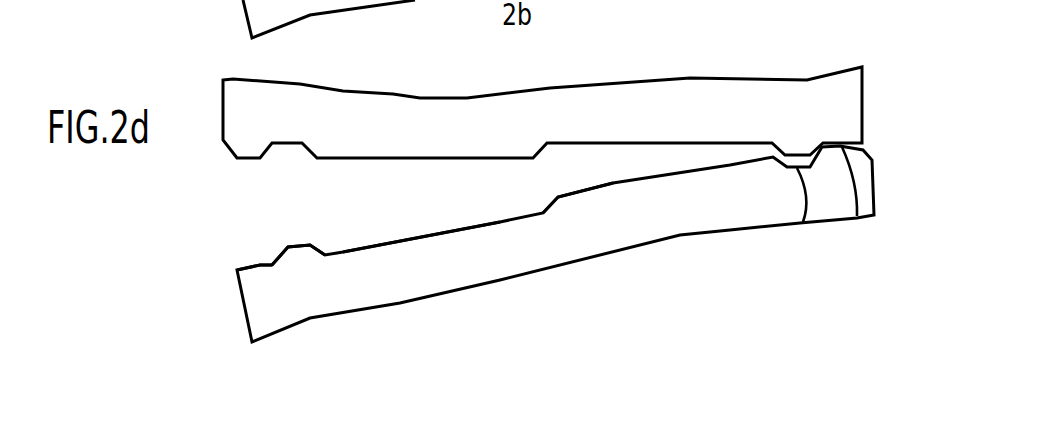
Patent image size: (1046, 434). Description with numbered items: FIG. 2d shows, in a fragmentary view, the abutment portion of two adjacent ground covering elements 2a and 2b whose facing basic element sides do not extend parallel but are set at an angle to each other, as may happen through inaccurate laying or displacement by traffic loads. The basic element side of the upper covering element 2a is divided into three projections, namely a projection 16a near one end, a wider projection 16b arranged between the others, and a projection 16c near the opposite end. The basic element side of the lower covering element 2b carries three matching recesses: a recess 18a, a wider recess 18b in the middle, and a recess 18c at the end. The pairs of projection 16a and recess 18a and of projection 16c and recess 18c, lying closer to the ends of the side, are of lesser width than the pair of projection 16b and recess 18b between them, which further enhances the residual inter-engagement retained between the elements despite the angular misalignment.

The covering element 2a is at (707, 97).
The covering element 2b is at (553, 248).
The projection 16a is at (300, 245).
The projection 16b is at (611, 184).
The projection 16c is at (857, 216).
The recess 18a is at (258, 265).
The recess 18b is at (418, 238).
The recess 18c is at (803, 222).